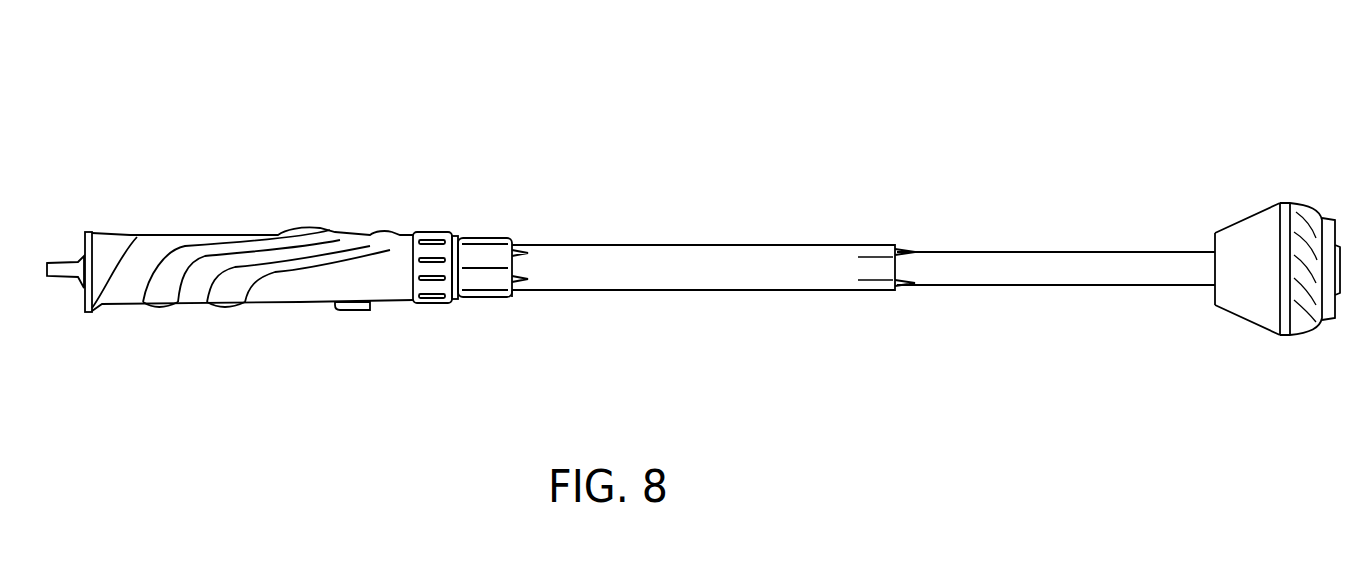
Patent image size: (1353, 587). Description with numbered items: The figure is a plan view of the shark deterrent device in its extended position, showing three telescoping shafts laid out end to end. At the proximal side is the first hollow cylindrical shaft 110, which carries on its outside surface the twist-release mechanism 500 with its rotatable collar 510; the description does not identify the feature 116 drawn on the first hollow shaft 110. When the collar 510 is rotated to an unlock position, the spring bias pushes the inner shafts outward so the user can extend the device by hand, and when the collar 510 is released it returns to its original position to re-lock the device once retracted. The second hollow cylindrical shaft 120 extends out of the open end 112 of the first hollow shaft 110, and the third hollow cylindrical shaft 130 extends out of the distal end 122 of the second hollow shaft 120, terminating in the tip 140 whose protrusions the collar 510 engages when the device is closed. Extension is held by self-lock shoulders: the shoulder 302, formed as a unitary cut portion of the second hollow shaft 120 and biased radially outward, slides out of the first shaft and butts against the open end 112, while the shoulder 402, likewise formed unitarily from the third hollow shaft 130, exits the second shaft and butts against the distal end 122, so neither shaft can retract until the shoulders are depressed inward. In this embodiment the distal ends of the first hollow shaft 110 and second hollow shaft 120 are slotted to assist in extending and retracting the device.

The first hollow cylindrical shaft 110 is at (170, 237).
The grip ridges 116 is at (296, 246).
The twist-release mechanism 500 is at (470, 219).
The collar 510 is at (430, 297).
The open end 112 is at (510, 297).
The shoulder 302 is at (533, 248).
The second hollow cylindrical shaft 120 is at (767, 244).
The distal end 122 is at (890, 291).
The shoulder 402 is at (907, 248).
The third hollow cylindrical shaft 130 is at (1075, 252).
The tip 140 is at (1270, 225).